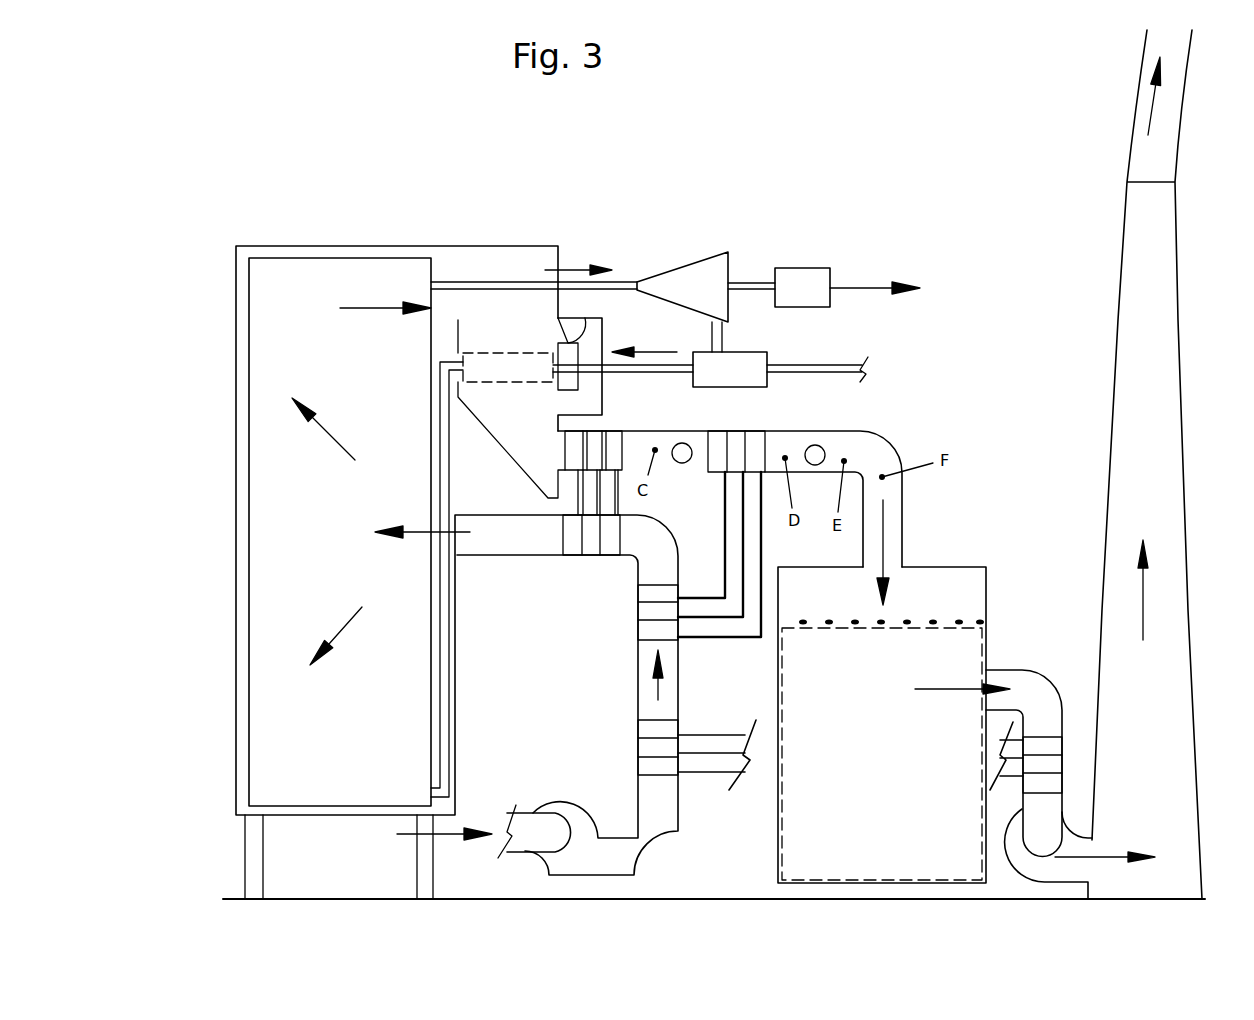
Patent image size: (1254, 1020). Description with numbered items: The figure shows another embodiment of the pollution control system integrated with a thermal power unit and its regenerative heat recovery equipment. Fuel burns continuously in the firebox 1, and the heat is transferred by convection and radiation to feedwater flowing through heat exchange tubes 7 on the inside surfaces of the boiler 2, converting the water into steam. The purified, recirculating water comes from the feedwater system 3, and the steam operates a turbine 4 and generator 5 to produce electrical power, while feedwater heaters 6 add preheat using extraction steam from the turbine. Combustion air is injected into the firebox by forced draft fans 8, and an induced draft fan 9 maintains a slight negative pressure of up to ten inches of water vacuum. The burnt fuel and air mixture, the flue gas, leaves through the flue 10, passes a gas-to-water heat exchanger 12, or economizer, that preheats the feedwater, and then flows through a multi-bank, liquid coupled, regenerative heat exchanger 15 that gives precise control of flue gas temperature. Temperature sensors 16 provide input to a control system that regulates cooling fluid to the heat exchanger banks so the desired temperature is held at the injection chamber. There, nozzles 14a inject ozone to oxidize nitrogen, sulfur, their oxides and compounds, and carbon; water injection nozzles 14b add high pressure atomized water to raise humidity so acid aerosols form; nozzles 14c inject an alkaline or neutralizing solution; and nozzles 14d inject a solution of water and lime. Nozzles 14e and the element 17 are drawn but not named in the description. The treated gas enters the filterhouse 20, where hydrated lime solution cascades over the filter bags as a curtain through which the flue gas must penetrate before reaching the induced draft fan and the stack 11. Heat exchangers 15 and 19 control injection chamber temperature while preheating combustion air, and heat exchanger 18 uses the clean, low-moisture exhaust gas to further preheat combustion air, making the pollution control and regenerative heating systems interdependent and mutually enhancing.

The firebox 1 is at (282, 218).
The boiler 2 is at (341, 258).
The feedwater system 3 is at (879, 343).
The turbine 4 is at (707, 259).
The generator 5 is at (795, 268).
The feedwater heaters 6 is at (767, 355).
The heat exchange tubes 7 is at (296, 548).
The forced draft fans 8 is at (568, 800).
The induced draft fan 9 is at (1018, 872).
The flue 10 is at (503, 318).
The stack 11 is at (1118, 330).
The gas-to-water heat exchanger 12 is at (488, 353).
The nozzles for ozone injection 14a is at (809, 427).
The water injection nozzles 14b is at (834, 430).
The alkaline solution nozzles 14c is at (864, 431).
The lime solution nozzles 14d is at (890, 443).
The flue gas sampling point 14e is at (691, 426).
The regenerative heat exchanger 15 is at (768, 448).
The temperature sensors 16 is at (682, 463).
The valve 17 is at (580, 323).
The heat exchanger 18 is at (660, 775).
The heat exchanger 19 is at (623, 448).
The filterhouse 20 is at (985, 516).